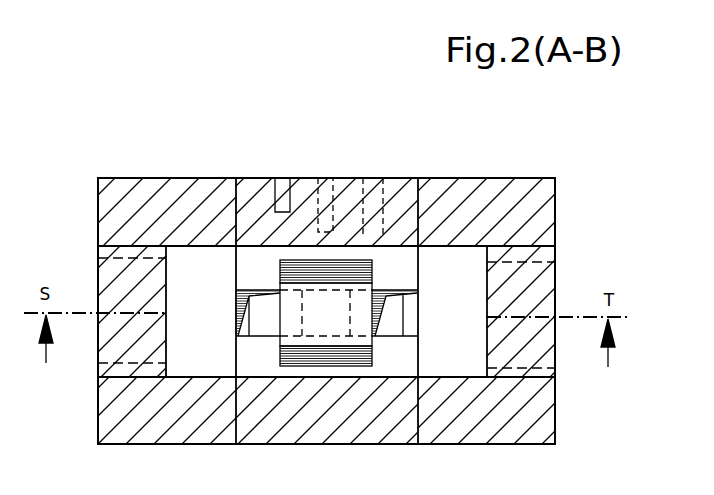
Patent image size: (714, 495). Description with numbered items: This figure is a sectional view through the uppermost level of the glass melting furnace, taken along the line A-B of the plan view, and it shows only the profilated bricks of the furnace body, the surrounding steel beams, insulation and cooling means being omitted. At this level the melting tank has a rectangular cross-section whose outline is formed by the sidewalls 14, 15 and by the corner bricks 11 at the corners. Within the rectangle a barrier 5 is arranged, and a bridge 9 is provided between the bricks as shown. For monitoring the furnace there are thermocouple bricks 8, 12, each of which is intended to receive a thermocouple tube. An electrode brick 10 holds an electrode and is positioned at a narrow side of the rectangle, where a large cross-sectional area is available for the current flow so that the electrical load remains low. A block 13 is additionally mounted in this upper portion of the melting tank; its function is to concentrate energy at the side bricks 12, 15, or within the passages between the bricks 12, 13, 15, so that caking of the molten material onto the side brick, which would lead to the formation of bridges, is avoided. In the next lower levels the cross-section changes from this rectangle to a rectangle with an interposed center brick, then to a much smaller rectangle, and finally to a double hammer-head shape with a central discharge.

The barrier 5 is at (270, 330).
The thermocouple brick 8 is at (389, 282).
The bridge 9 is at (193, 281).
The electrode brick 10 is at (129, 288).
The corner brick 11 is at (169, 187).
The thermocouple brick 12 is at (258, 191).
The block 13 is at (337, 330).
The sidewall 14 is at (265, 369).
The sidewall 15 is at (277, 434).